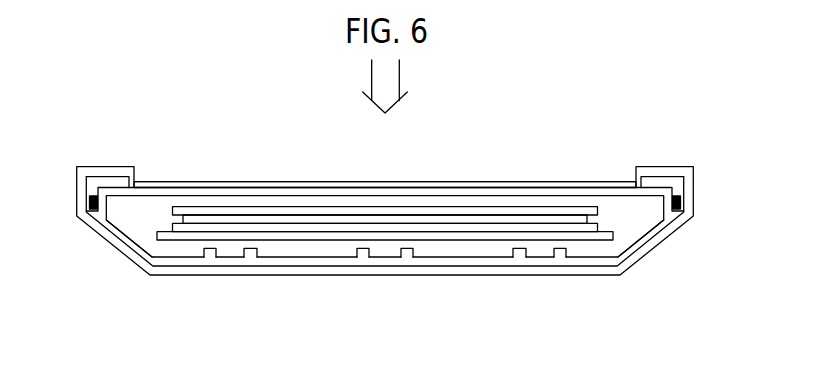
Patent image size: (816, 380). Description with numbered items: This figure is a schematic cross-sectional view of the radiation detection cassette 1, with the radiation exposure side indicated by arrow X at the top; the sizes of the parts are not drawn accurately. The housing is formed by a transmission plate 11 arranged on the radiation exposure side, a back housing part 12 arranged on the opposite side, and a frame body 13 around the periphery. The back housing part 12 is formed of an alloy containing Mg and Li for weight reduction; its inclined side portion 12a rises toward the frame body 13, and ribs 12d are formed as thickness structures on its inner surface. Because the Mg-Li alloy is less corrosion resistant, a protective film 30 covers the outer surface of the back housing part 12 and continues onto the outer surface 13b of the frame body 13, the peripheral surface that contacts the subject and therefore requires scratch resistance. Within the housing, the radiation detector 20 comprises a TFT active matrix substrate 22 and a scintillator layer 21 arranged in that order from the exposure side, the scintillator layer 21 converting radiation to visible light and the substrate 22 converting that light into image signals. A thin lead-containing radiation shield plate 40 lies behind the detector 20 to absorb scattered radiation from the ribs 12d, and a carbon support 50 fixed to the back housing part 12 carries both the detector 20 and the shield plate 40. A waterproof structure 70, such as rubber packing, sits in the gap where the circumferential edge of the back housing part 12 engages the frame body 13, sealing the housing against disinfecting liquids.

The radiation detection cassette 1 is at (160, 91).
The transmission plate 11 is at (311, 181).
The back housing part 12 is at (232, 262).
The inclined side portion of bottom chassis 12a is at (120, 261).
The ribs 12d is at (408, 252).
The frame body 13 is at (131, 181).
The outer surface of the frame body 13b is at (113, 168).
The radiation detector 20 is at (385, 152).
The scintillator layer 21 is at (222, 217).
The TFT active matrix substrate 22 is at (262, 208).
The protective film 30 is at (88, 166).
The radiation shield plate 40 is at (485, 232).
The support 50 is at (590, 240).
The waterproof structure 70 is at (89, 203).
The arrow indicating radiation exposure side X is at (401, 73).